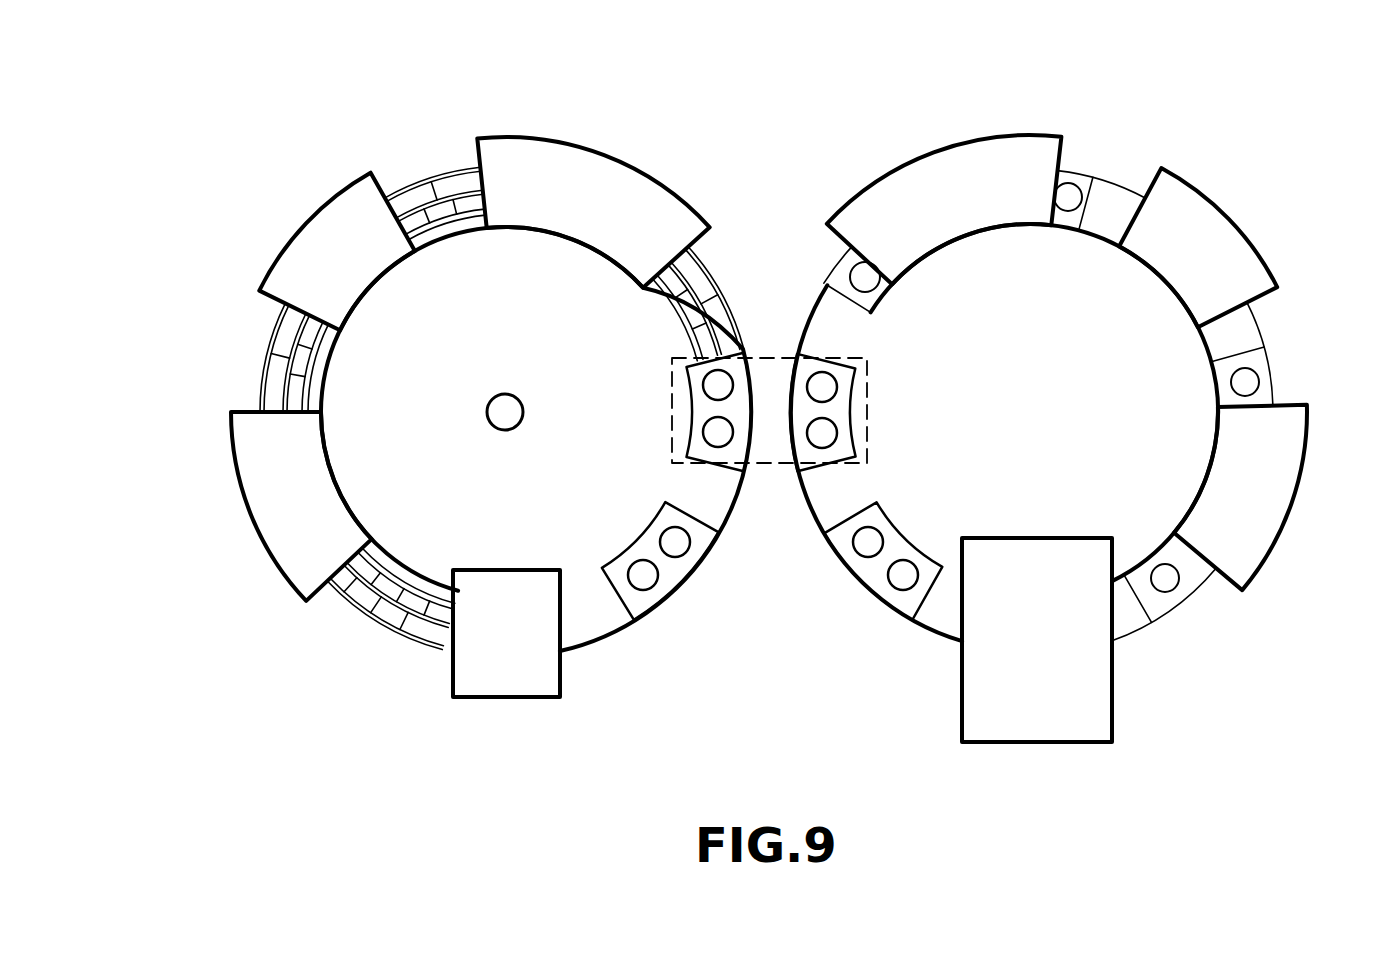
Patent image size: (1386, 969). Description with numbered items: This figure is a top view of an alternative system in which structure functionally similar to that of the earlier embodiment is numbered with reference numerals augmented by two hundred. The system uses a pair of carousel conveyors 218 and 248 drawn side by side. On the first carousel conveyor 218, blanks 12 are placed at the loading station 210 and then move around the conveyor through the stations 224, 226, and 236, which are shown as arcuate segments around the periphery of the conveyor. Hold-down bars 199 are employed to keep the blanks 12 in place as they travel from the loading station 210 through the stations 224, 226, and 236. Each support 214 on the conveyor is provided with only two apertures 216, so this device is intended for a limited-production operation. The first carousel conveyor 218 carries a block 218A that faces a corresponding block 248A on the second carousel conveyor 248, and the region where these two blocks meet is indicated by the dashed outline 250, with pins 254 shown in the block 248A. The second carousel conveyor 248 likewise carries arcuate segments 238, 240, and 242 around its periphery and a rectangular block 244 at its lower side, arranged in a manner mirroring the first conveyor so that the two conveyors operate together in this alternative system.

The blanks 12 is at (355, 600).
The hold-down bars 199 is at (420, 623).
The loading station 210 is at (514, 677).
The support 214 is at (682, 588).
The apertures 216 is at (638, 562).
The carousel conveyor 218 is at (600, 622).
The coupling block 218A is at (690, 412).
The station 224 is at (253, 483).
The station 226 is at (315, 243).
The station 236 is at (623, 197).
The magnet segment 238 is at (987, 172).
The magnet segment 240 is at (1215, 242).
The magnet segment 242 is at (1285, 450).
The connector block 244 is at (1078, 712).
The carousel conveyor 248 is at (825, 490).
The coupling block 248A is at (862, 392).
The coupling region 250 is at (767, 350).
The coupling pins 254 is at (843, 445).